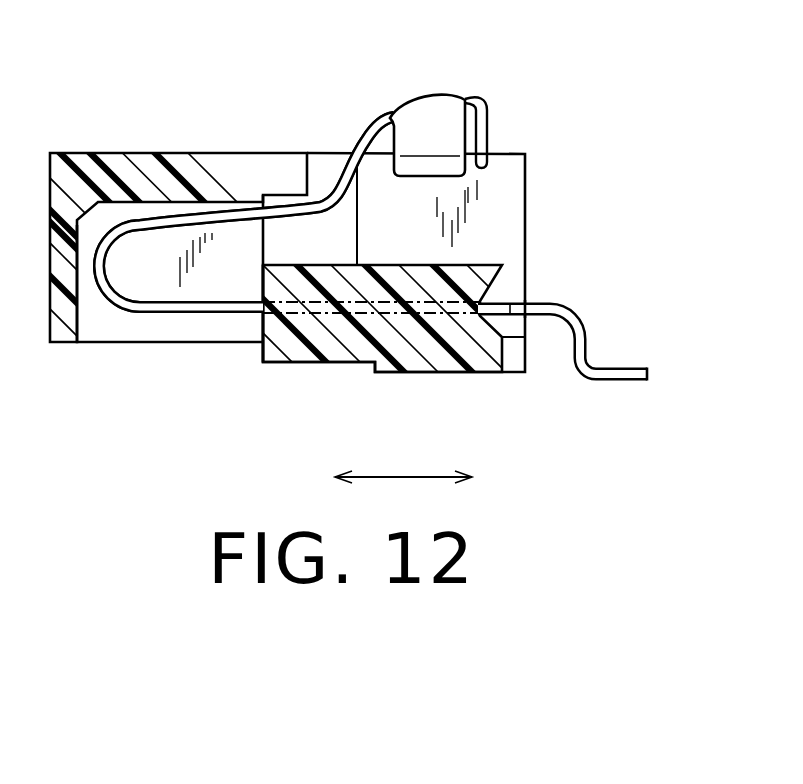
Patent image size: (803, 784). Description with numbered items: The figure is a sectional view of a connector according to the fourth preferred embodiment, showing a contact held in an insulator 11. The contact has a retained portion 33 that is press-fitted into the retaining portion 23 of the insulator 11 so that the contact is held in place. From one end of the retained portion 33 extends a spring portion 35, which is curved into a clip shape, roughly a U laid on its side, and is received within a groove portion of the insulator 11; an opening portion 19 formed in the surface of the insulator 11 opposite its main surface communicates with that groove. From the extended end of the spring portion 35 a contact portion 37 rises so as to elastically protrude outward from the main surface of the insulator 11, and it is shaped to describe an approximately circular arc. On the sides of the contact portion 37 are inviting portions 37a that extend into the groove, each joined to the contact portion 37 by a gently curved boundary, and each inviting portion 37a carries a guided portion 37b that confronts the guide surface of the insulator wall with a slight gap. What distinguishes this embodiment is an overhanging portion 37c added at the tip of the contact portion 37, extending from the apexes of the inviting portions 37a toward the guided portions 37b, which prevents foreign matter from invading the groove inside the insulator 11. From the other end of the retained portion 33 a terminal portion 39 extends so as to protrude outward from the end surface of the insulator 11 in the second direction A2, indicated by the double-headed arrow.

The insulator 11 is at (131, 153).
The opening portion 19 is at (102, 332).
The retaining portion 23 is at (438, 352).
The retained portion 33 is at (364, 308).
The spring portion 35 is at (203, 317).
The contact portion 37 is at (391, 110).
The inviting portion 37a is at (423, 113).
The guided portion 37b is at (433, 177).
The overhanging portion 37c is at (487, 121).
The terminal portion 39 is at (592, 360).
The second direction A2 is at (427, 477).